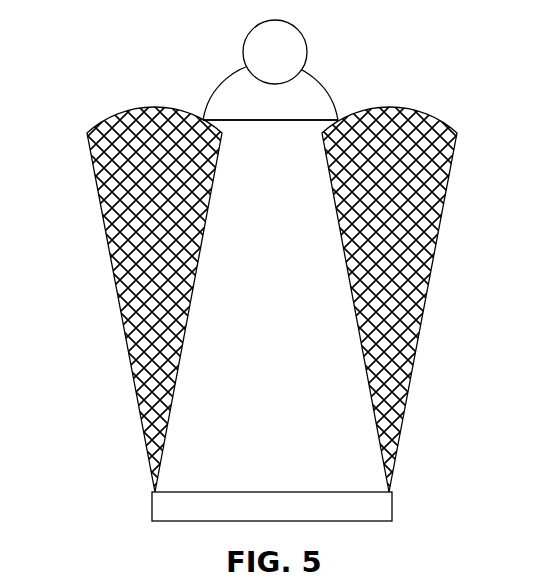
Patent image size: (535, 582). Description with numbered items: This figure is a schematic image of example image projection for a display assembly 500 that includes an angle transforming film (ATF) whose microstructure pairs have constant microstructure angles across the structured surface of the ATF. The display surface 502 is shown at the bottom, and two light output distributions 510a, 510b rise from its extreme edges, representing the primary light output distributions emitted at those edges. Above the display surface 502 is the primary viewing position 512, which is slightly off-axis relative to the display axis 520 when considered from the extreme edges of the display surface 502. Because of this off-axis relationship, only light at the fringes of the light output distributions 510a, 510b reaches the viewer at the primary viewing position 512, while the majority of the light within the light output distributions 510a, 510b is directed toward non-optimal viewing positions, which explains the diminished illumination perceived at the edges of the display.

The display assembly 500 is at (137, 481).
The display surface 502 is at (188, 492).
The light output distribution 510a is at (133, 300).
The light output distribution 510b is at (438, 267).
The primary viewing position 512 is at (272, 108).
The display axis 520 is at (165, 312).